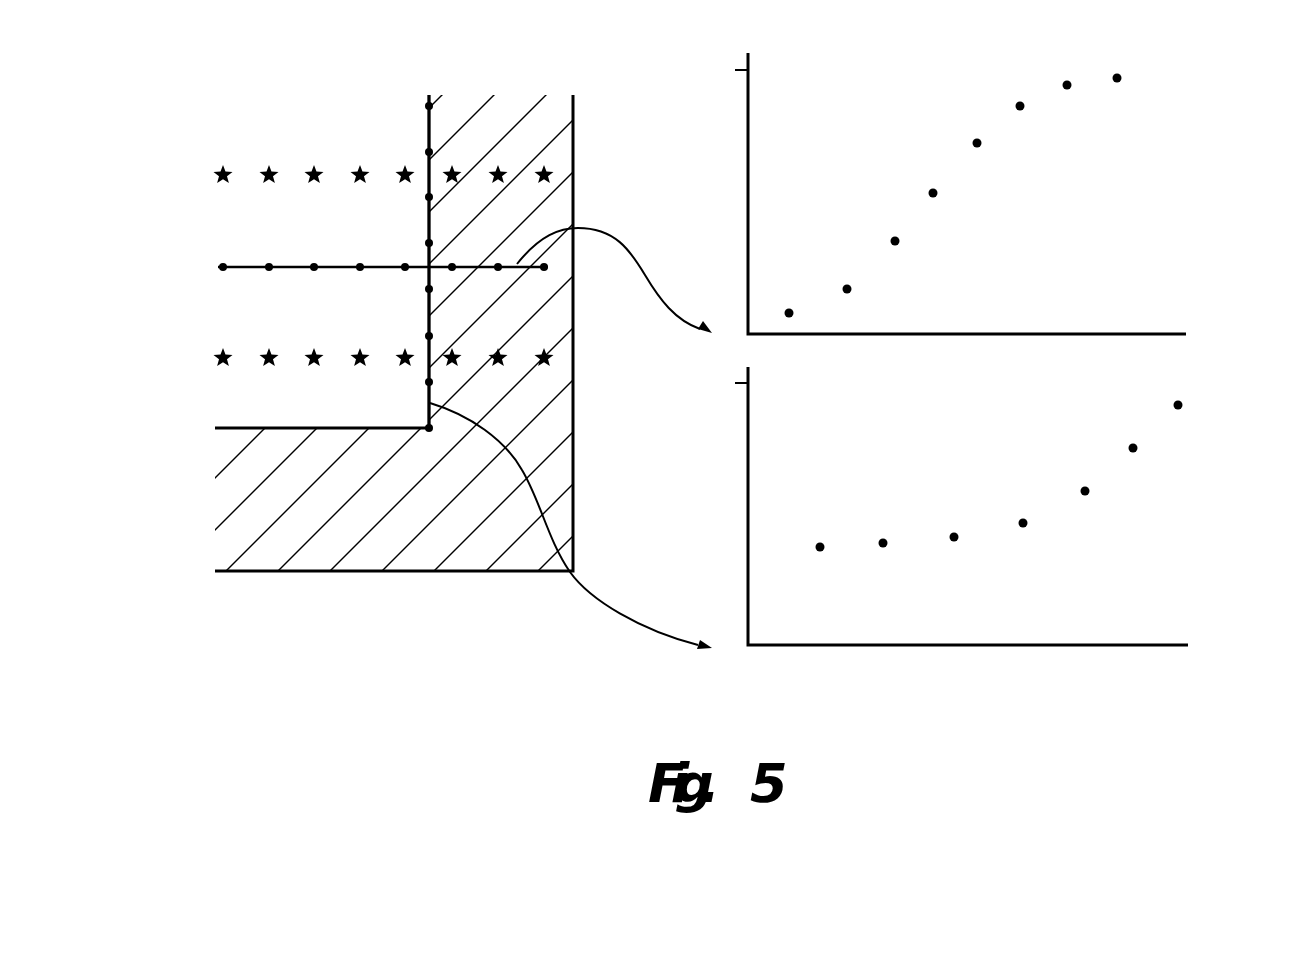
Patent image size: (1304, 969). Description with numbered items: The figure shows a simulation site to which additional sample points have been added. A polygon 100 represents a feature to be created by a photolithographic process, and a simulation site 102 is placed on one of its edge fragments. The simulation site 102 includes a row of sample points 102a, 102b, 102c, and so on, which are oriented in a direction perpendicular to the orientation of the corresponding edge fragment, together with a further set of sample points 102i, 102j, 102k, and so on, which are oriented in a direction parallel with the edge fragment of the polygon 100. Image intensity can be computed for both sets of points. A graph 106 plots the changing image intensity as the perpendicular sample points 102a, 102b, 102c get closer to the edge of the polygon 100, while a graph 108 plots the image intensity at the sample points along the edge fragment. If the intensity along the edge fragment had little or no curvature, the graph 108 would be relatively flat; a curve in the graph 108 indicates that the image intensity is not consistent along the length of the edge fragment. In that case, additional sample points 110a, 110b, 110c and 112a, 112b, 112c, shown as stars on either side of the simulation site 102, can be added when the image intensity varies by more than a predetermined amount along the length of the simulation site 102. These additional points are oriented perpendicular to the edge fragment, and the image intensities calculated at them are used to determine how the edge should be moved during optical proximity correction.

The polygon 100 is at (358, 572).
The simulation site 102 is at (388, 353).
The sample point 102a is at (221, 272).
The sample point 102b is at (269, 269).
The sample point 102c is at (315, 269).
The sample point 102i is at (430, 429).
The sample point 102j is at (431, 382).
The sample point 102k is at (431, 336).
The graph 106 is at (1240, 117).
The graph 108 is at (1240, 424).
The additional sample point 110a is at (222, 366).
The additional sample point 110b is at (268, 367).
The additional sample point 110c is at (315, 367).
The additional sample point 112a is at (219, 168).
The additional sample point 112b is at (271, 169).
The additional sample point 112c is at (314, 168).